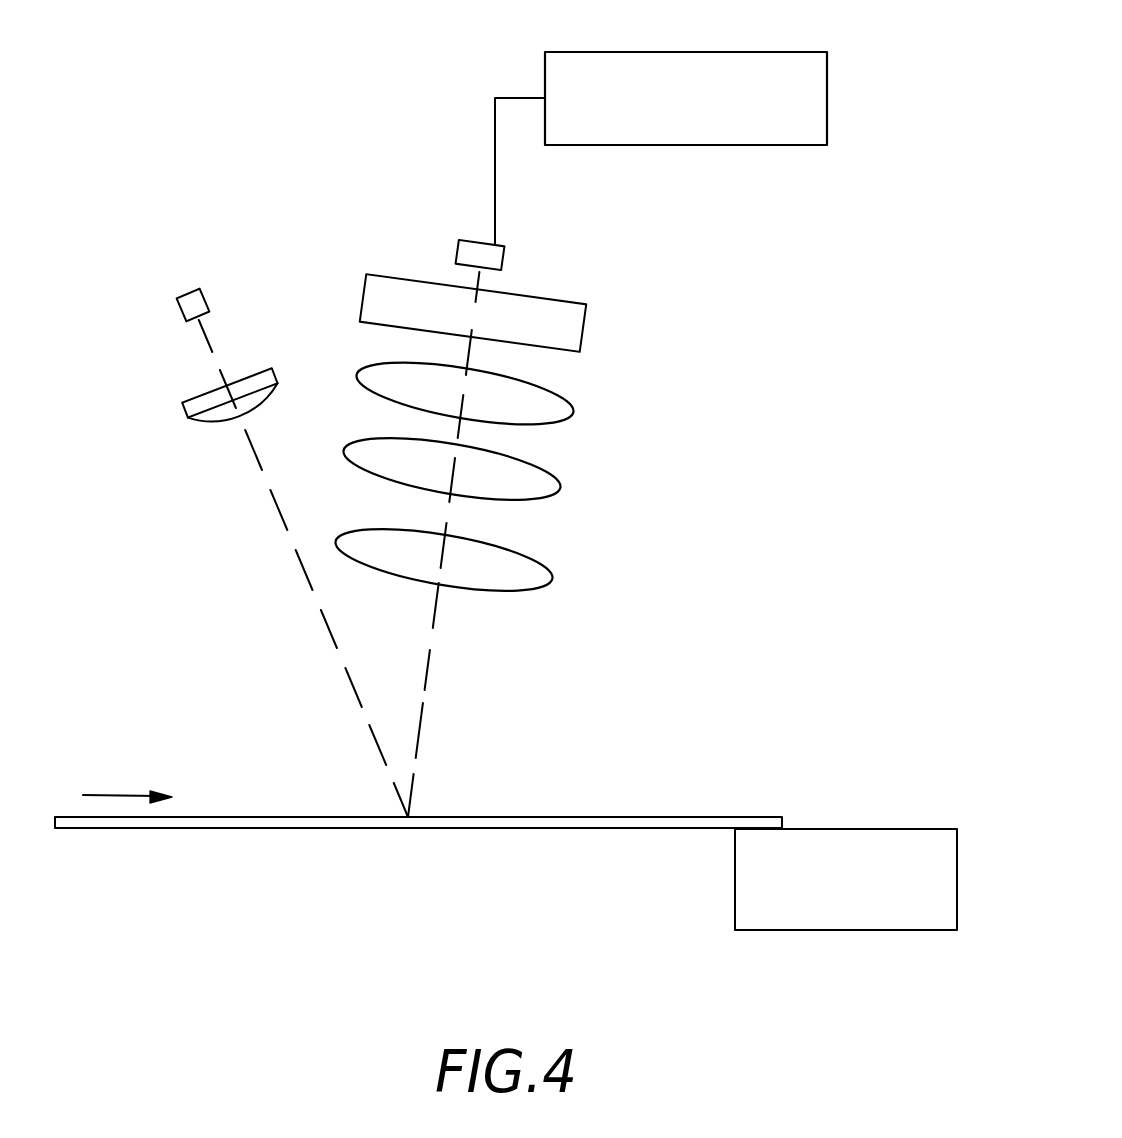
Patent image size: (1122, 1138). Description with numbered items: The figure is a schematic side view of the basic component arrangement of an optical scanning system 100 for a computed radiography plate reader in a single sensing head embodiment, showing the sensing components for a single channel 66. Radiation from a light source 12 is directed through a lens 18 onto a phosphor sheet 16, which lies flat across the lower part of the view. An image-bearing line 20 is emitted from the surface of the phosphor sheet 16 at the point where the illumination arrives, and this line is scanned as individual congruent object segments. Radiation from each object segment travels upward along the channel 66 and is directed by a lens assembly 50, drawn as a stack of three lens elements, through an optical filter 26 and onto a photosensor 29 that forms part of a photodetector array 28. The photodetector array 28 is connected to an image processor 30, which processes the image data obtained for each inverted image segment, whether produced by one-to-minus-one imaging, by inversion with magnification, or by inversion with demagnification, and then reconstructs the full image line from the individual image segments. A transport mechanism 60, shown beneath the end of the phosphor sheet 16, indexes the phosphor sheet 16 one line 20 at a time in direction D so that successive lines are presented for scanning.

The image processor 30 is at (627, 52).
The photosensor 29 is at (480, 238).
The photodetector array 28 is at (468, 248).
The optical filter 26 is at (585, 328).
The lens assembly 50 is at (608, 418).
The light source 12 is at (197, 320).
The lens 18 is at (188, 418).
The single channel 66 is at (423, 705).
The optical scanning system 100 is at (182, 690).
The direction D is at (117, 795).
The image-bearing line 20 is at (405, 815).
The phosphor sheet 16 is at (607, 827).
The transport mechanism 60 is at (847, 840).